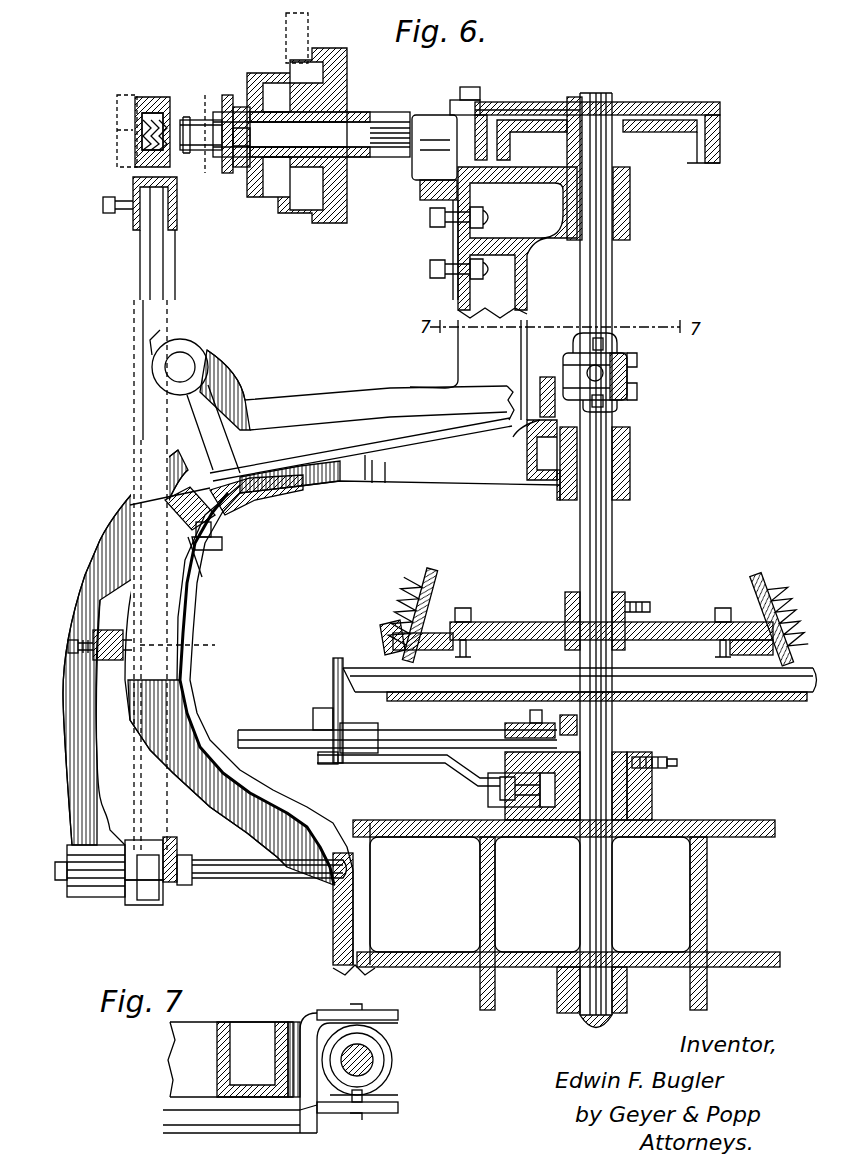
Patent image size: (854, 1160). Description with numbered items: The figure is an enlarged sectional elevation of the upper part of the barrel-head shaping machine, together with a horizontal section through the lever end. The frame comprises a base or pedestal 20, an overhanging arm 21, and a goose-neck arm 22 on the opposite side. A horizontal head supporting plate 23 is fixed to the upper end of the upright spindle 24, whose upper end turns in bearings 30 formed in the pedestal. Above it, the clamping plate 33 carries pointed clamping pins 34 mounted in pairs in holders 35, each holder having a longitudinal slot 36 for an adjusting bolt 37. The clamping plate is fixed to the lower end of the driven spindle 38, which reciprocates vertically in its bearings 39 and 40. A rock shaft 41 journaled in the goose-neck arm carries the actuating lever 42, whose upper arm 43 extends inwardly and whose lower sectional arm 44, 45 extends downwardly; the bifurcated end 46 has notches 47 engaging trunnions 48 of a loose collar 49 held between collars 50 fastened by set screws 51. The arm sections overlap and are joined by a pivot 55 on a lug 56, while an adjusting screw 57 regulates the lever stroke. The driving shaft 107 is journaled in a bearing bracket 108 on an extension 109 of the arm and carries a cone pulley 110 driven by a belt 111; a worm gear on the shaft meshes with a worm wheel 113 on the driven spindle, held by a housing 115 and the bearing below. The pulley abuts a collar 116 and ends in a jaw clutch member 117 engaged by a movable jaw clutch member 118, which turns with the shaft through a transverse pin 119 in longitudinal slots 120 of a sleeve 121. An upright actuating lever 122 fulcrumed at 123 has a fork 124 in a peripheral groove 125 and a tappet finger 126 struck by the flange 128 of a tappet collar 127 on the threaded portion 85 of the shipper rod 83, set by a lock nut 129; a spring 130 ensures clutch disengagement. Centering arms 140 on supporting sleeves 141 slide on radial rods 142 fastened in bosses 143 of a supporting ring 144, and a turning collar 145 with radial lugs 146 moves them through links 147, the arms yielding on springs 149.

In FIG. 6, the base or pedestal 20 is at (707, 995).
In FIG. 6, the overhanging arm 21 is at (770, 828).
In FIG. 6, the goose-neck arm 22 is at (231, 853).
In FIG. 7, the goose-neck arm 22 is at (180, 1060).
In FIG. 6, the head supporting plate 23 is at (760, 705).
In FIG. 6, the upright spindle 24 is at (606, 900).
In FIG. 6, the bearings 30 is at (627, 990).
In FIG. 6, the clamping plate or disk 33 is at (685, 618).
In FIG. 6, the clamping pins 34 is at (375, 640).
In FIG. 6, the holder 35 is at (425, 578).
In FIG. 6, the longitudinal slot 36 is at (423, 652).
In FIG. 6, the adjusting bolt 37 is at (480, 622).
In FIG. 6, the driven spindle 38 is at (608, 545).
In FIG. 7, the driven spindle 38 is at (373, 1065).
In FIG. 6, the bearing 39 is at (630, 472).
In FIG. 6, the bearing 40 is at (630, 208).
In FIG. 6, the rock shaft 41 is at (195, 363).
In FIG. 6, the actuating lever 42 is at (240, 495).
In FIG. 6, the upper arm 43 is at (380, 421).
In FIG. 7, the upper arm 43 is at (290, 1130).
In FIG. 6, the lower arm section 44 is at (125, 645).
In FIG. 6, the lower arm section 45 is at (265, 685).
In FIG. 6, the bifurcated end 46 is at (520, 440).
In FIG. 7, the bifurcated end 46 is at (398, 1022).
In FIG. 6, the notches or recesses 47 is at (637, 378).
In FIG. 6, the trunnions 48 is at (603, 375).
In FIG. 7, the trunnions 48 is at (355, 1005).
In FIG. 6, the collar 49 is at (575, 368).
In FIG. 6, the collars 50 is at (617, 338).
In FIG. 7, the collars 50 is at (380, 1050).
In FIG. 6, the set screws 51 is at (593, 344).
In FIG. 7, the set screws 51 is at (362, 1096).
In FIG. 6, the pivot 55 is at (212, 530).
In FIG. 6, the lug 56 is at (207, 565).
In FIG. 6, the adjusting screw 57 is at (110, 662).
In FIG. 6, the shipper rod 83 is at (298, 880).
In FIG. 6, the screw thread 85 is at (62, 885).
In FIG. 6, the driving shaft 107 is at (311, 134).
In FIG. 6, the bearing bracket 108 is at (400, 122).
In FIG. 6, the extension 109 is at (440, 267).
In FIG. 6, the cone pulley 110 is at (313, 228).
In FIG. 6, the belt 111 is at (310, 18).
In FIG. 6, the worm wheel 113 is at (720, 140).
In FIG. 6, the housing 115 is at (690, 102).
In FIG. 6, the collar 116 is at (240, 170).
In FIG. 6, the jaw clutch member 117 is at (228, 92).
In FIG. 6, the movable jaw clutch member 118 is at (235, 150).
In FIG. 6, the transverse pin 119 is at (185, 114).
In FIG. 6, the longitudinal slots 120 is at (190, 150).
In FIG. 6, the sleeve 121 is at (205, 92).
In FIG. 6, the actuating lever 122 is at (160, 290).
In FIG. 6, the fulcrum 123 is at (193, 634).
In FIG. 6, the fork 124 is at (150, 100).
In FIG. 6, the peripheral groove 125 is at (118, 105).
In FIG. 6, the tappet finger 126 is at (130, 850).
In FIG. 6, the tappet collar 127 is at (145, 880).
In FIG. 6, the flange 128 is at (180, 890).
In FIG. 6, the lock nut 129 is at (185, 860).
In FIG. 6, the spring 130 is at (140, 140).
In FIG. 6, the centering arms 140 is at (333, 670).
In FIG. 6, the supporting sleeves 141 is at (365, 725).
In FIG. 6, the radial rods 142 is at (445, 730).
In FIG. 6, the bosses 143 is at (520, 730).
In FIG. 6, the supporting ring or hub 144 is at (650, 752).
In FIG. 6, the collar 145 is at (520, 820).
In FIG. 6, the radial lugs 146 is at (495, 795).
In FIG. 6, the links 147 is at (410, 765).
In FIG. 6, the springs 149 is at (328, 764).